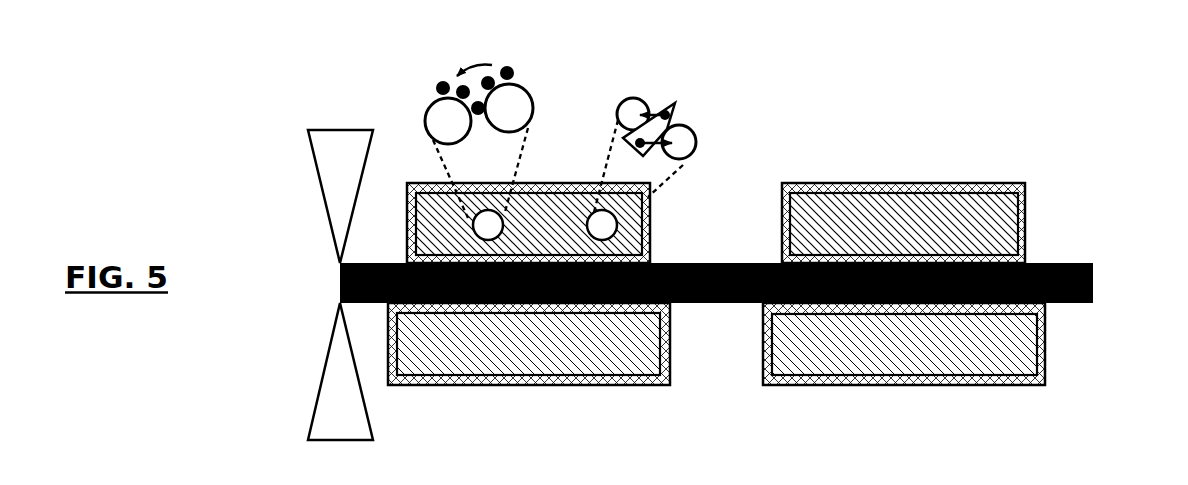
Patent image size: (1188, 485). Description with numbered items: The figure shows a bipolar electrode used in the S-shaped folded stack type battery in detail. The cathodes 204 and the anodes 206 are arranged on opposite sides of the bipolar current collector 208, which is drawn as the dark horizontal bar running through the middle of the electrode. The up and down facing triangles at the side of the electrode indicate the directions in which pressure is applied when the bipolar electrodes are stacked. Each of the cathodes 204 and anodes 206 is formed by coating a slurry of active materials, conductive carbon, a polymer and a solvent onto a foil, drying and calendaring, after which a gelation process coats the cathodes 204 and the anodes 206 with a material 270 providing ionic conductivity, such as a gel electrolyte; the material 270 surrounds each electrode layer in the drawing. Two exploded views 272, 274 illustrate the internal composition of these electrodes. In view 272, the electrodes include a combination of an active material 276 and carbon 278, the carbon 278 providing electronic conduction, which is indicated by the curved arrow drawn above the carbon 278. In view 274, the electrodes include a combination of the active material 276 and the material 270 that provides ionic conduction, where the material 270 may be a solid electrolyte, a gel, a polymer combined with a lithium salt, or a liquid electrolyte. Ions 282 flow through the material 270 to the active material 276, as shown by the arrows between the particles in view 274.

The cathodes 204 is at (540, 213).
The anodes 206 is at (527, 340).
The bipolar current collector 208 is at (1093, 282).
The material providing ionic conductivity 270 is at (660, 108).
The exploded view 272 is at (511, 46).
The exploded view 274 is at (762, 87).
The active material 276 is at (527, 87).
The carbon 278 is at (437, 88).
The ions 282 is at (667, 110).